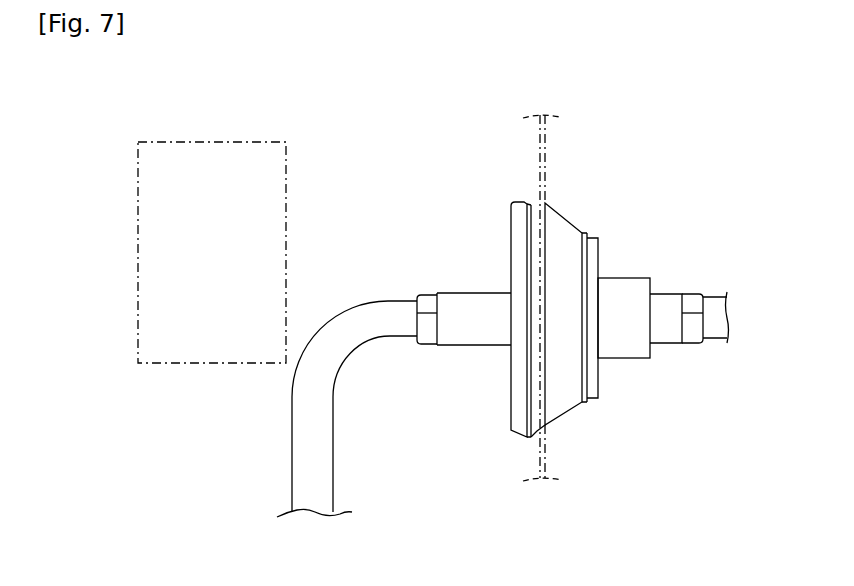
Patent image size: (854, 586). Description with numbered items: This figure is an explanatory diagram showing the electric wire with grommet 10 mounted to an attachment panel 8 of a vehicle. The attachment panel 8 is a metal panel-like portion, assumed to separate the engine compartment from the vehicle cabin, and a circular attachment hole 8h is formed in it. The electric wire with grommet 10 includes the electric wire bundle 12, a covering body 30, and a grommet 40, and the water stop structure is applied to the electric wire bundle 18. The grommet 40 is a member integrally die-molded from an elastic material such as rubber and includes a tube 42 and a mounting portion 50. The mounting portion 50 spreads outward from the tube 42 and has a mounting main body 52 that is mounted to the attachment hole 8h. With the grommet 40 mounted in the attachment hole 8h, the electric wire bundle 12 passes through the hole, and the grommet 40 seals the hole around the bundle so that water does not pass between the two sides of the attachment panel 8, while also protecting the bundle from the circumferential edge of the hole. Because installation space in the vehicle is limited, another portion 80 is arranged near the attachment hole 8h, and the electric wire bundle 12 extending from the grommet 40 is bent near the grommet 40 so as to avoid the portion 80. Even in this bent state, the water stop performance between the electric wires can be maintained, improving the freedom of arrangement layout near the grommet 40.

The portion 80 is at (212, 141).
The electric wire bundle 12 is at (333, 462).
The covering body 30 is at (428, 345).
The electric wire bundle 18 is at (475, 284).
The grommet 40 is at (501, 203).
The mounting portion 50 is at (514, 443).
The attachment panel 8 is at (540, 148).
The attachment hole 8h is at (562, 212).
The mounting main body 52 is at (565, 410).
The electric wire with grommet 10 is at (611, 171).
The tube 42 is at (667, 293).